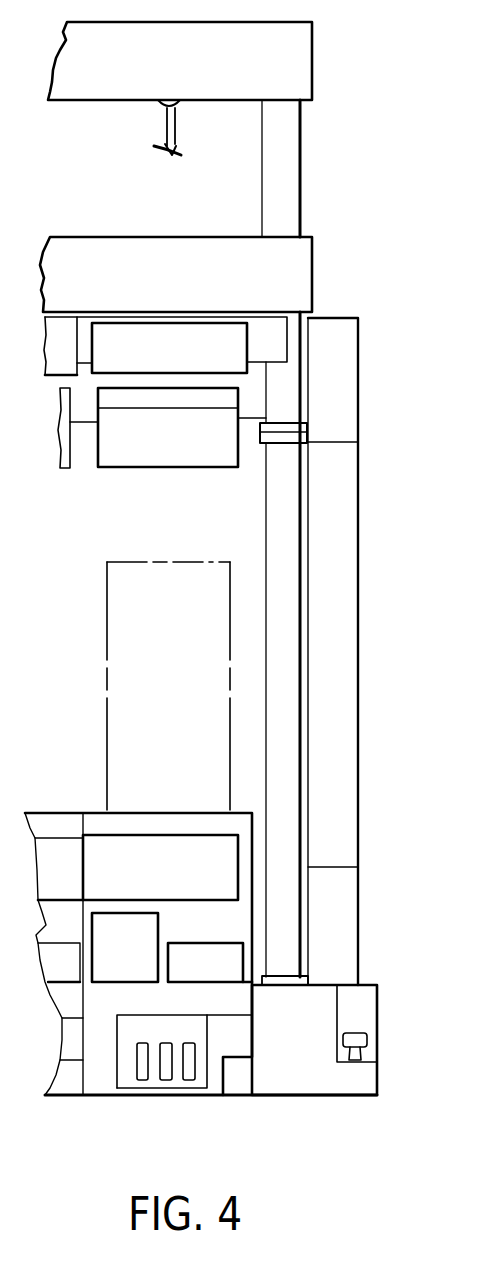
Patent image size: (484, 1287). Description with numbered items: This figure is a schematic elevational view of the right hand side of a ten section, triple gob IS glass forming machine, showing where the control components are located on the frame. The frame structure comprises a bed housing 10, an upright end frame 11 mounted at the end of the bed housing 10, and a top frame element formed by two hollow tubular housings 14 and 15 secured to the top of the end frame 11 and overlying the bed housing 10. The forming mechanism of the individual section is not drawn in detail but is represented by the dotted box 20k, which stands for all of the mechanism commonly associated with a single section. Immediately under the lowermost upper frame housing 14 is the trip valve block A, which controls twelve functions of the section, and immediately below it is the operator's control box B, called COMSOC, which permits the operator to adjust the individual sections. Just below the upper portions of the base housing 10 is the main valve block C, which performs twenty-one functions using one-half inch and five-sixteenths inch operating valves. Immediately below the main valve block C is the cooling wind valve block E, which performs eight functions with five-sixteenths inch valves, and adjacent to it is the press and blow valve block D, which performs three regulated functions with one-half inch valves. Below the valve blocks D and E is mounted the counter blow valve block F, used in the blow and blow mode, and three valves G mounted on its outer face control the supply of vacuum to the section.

The bed housing 10 is at (307, 1072).
The upright end frames 11 is at (358, 600).
The hollow tubular housing 14 is at (313, 276).
The hollow tubular housing 15 is at (313, 76).
The trip valve block A is at (178, 358).
The operator's control box B is at (153, 445).
The main valve block C is at (144, 878).
The press and blow valve block D is at (193, 971).
The cooling wind valve block E is at (112, 958).
The counter blow valve block F is at (142, 1040).
The valves G is at (143, 1081).
The dotted box 20k is at (186, 652).